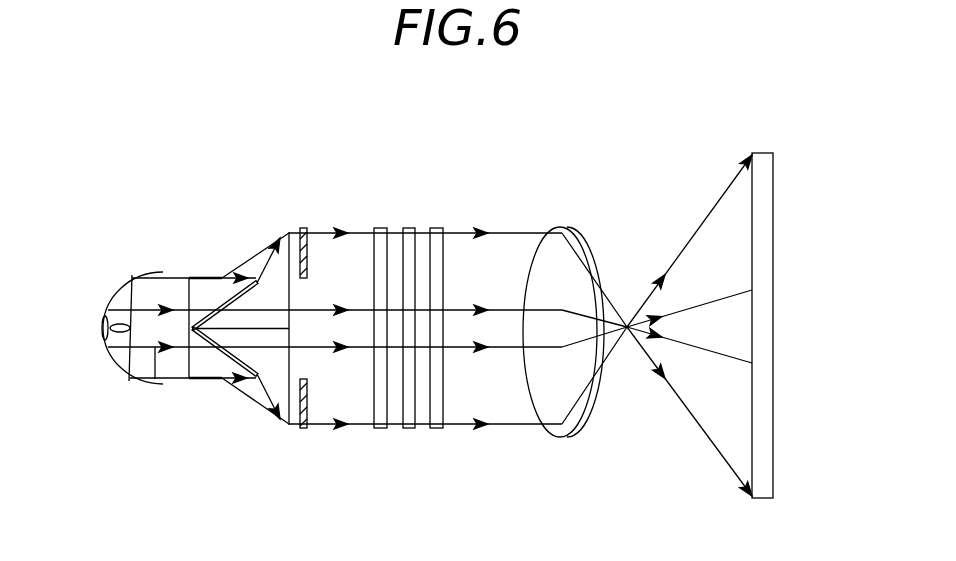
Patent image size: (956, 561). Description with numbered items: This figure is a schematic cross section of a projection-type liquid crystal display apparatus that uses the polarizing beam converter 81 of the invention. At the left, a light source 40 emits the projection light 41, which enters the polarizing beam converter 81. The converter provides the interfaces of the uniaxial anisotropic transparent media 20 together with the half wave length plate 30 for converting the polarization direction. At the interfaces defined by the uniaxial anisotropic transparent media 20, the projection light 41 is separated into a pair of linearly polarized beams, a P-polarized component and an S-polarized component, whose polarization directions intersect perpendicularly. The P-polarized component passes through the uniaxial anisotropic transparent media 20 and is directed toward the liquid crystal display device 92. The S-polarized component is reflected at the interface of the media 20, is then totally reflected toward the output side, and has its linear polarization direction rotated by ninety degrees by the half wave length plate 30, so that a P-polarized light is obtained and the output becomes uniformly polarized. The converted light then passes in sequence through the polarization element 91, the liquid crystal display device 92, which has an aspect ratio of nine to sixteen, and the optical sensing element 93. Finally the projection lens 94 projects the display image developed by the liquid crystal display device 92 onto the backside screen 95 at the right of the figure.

The uniaxial anisotropic transparent media 20 is at (224, 277).
The half wave length plate 30 is at (303, 228).
The light source 40 is at (110, 360).
The projection light 41 is at (155, 380).
The polarizing beam converter 81 is at (250, 399).
The polarization element 91 is at (378, 228).
The liquid crystal display device 92 is at (407, 228).
The optical sensing element 93 is at (440, 228).
The projection lens 94 is at (558, 227).
The backside screen 95 is at (762, 153).